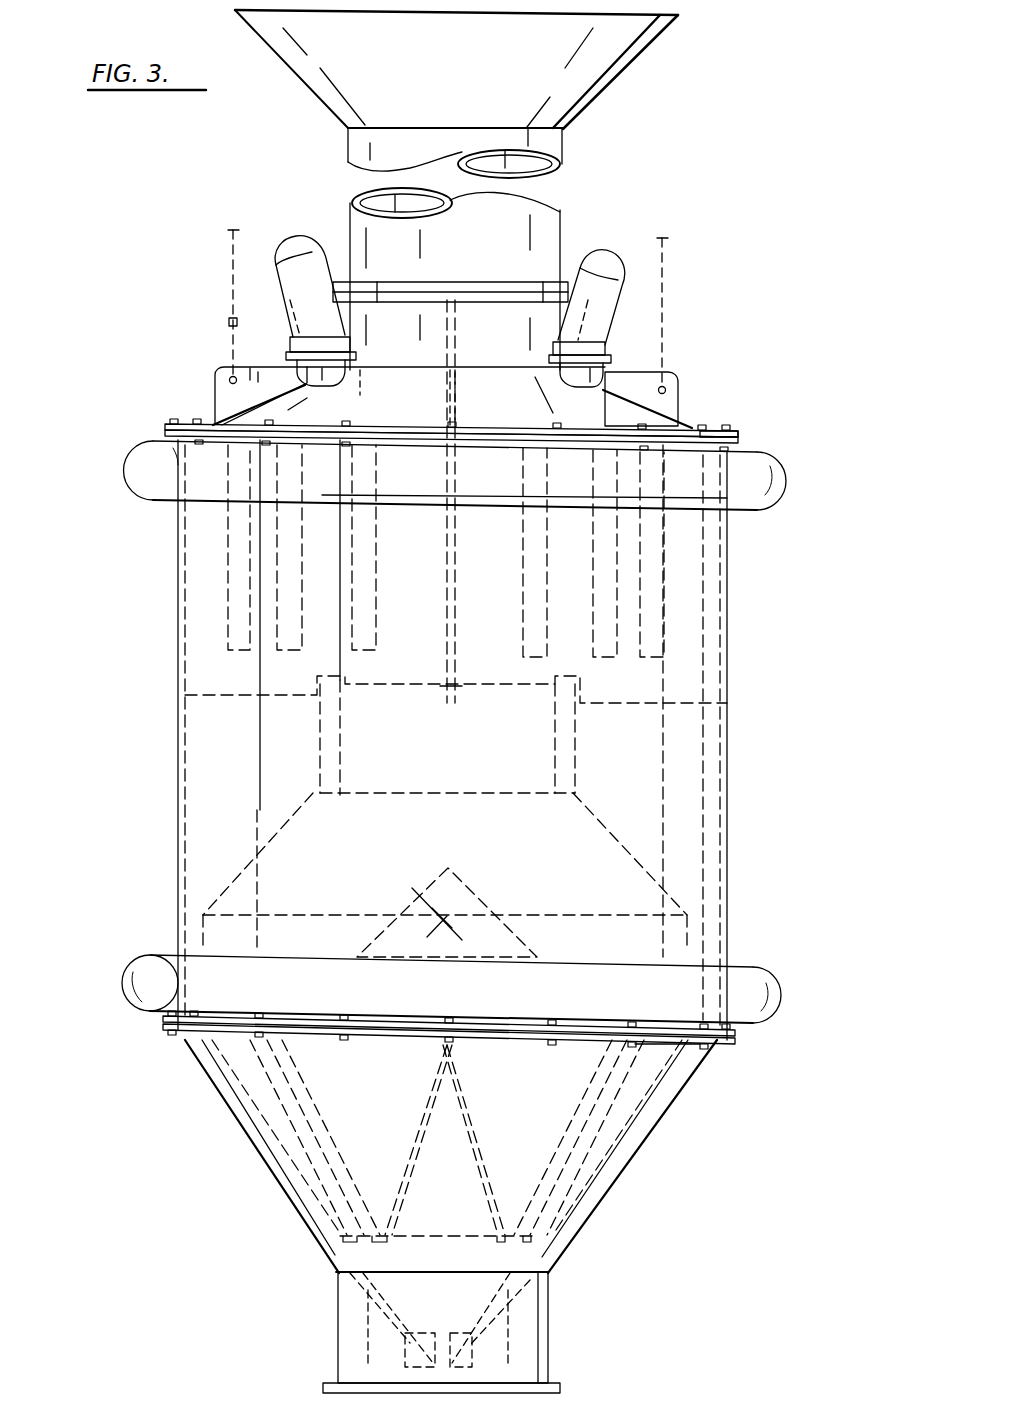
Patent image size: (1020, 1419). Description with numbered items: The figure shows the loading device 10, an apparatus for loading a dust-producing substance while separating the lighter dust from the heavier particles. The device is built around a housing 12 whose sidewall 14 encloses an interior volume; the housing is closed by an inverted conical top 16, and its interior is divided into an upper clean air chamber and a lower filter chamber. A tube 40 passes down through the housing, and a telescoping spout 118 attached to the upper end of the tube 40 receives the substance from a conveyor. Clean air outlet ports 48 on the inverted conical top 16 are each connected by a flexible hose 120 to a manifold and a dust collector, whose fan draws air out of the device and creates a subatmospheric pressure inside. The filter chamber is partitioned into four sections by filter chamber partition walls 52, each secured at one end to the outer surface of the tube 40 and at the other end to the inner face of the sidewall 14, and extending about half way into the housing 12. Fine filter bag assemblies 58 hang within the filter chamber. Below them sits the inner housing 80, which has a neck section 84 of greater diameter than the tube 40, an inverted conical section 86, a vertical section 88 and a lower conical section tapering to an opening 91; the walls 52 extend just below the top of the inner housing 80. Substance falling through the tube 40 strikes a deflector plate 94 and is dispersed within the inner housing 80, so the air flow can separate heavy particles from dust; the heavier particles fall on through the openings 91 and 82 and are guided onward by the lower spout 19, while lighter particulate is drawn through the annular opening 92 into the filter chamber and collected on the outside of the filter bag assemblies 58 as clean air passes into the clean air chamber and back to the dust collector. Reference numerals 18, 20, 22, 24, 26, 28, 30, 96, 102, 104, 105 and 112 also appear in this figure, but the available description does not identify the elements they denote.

The loading device 10 is at (745, 362).
The housing 12 is at (175, 687).
The sidewall 14 is at (180, 765).
The inverted conical top 16 is at (700, 402).
The hopper 18 is at (620, 1165).
The lower spout 19 is at (550, 1355).
The upper flange 20 is at (162, 432).
The lower flange 22 is at (160, 1026).
The upper flange plate 24 is at (165, 424).
The flange plate 26 is at (738, 432).
The hopper flange 28 is at (163, 1038).
The hopper flange plate 30 is at (648, 1050).
The tube 40 is at (548, 330).
The clean air outlet port 48 is at (300, 368).
The filter chamber partition wall 52 is at (455, 575).
The fine filter bag assembly 58 is at (660, 632).
The inner housing 80 is at (498, 862).
The discharge opening 82 is at (553, 1288).
The neck section 84 is at (578, 727).
The inverted conical section 86 is at (600, 828).
The vertical section 88 is at (690, 935).
The opening 91 is at (410, 1240).
The annular opening 92 is at (560, 705).
The deflector plate 94 is at (478, 888).
The bracket 96 is at (420, 896).
The discharge member 102 is at (395, 1330).
The band 104 is at (133, 494).
The bracket 105 is at (215, 380).
The rod 112 is at (230, 242).
The telescoping spout 118 is at (560, 210).
The flexible hose 120 is at (280, 222).